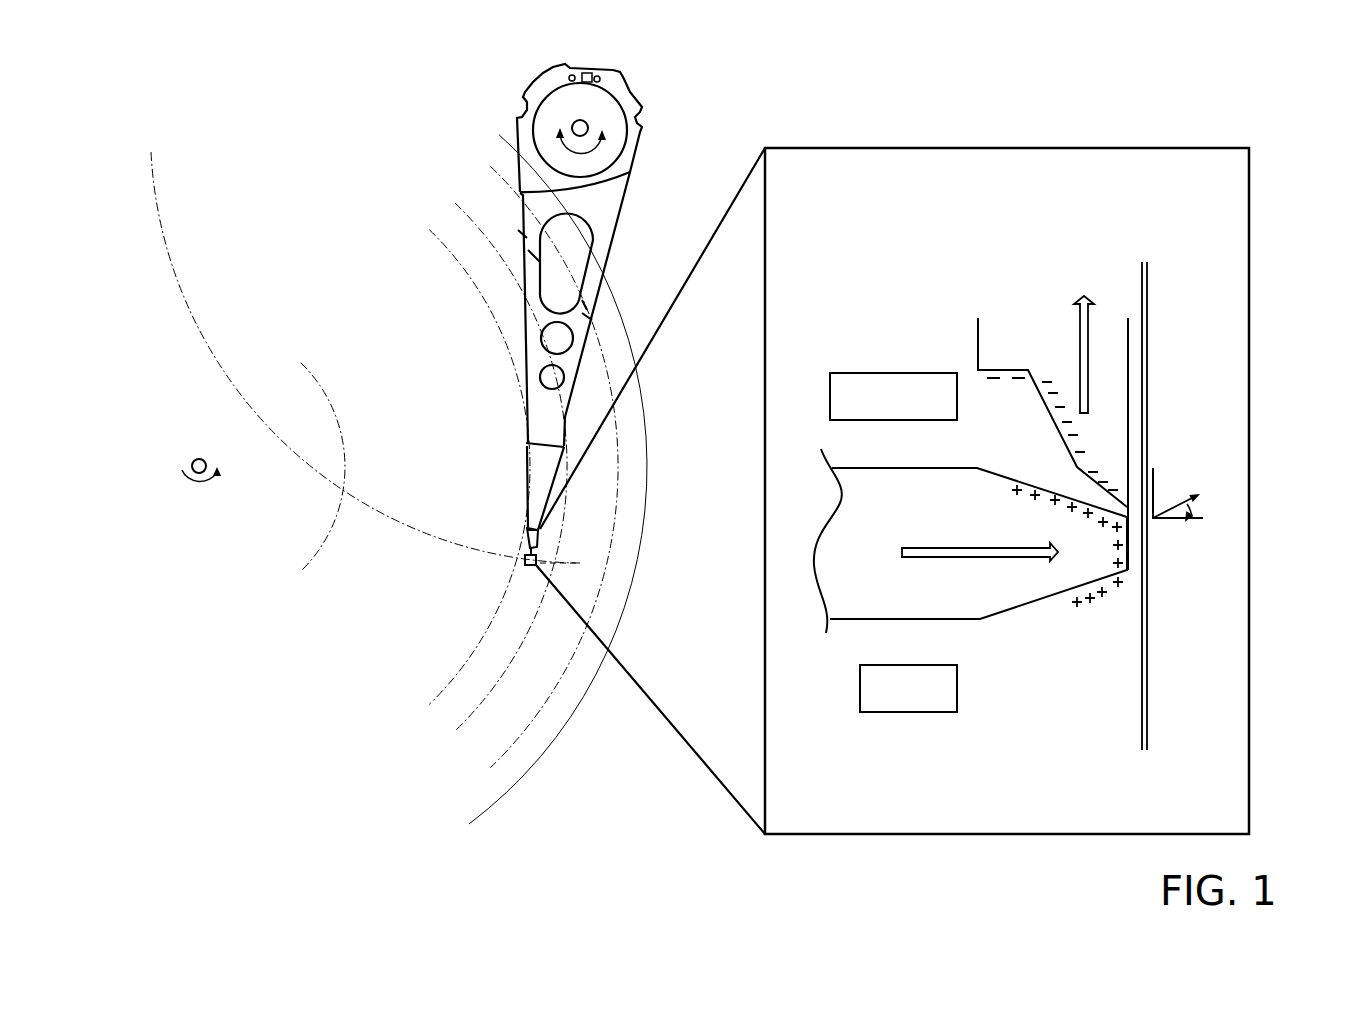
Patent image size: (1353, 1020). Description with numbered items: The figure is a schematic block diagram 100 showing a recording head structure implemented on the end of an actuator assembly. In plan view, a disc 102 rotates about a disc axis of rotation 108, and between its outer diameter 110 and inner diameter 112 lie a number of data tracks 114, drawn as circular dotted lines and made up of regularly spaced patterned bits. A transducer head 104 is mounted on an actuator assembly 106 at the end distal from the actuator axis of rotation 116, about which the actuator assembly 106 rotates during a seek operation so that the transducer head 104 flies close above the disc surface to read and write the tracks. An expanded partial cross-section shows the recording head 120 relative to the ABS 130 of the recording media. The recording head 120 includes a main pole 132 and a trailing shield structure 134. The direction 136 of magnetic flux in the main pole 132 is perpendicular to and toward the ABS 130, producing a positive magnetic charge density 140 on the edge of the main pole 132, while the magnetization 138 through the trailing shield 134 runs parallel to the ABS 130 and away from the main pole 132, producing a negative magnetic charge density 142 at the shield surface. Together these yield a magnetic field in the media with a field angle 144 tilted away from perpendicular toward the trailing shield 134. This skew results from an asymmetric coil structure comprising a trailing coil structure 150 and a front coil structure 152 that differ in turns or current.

The schematic block diagram 100 is at (207, 135).
The disc 102 is at (222, 705).
The transducer head 104 is at (525, 563).
The actuator assembly 106 is at (519, 118).
The disc axis of rotation 108 is at (182, 468).
The outer diameter 110 is at (493, 767).
The inner diameter 112 is at (308, 557).
The data tracks 114 is at (428, 728).
The actuator axis of rotation 116 is at (588, 128).
The recording head 120 is at (833, 835).
The ABS 130 is at (1159, 268).
The main pole 132 is at (862, 531).
The trailing shield structure 134 is at (962, 343).
The magnetization direction in main pole 136 is at (994, 561).
The magnetization in trailing shield 138 is at (1102, 351).
The positive magnetic charge density 140 is at (1010, 483).
The negative magnetic charge density 142 is at (1105, 455).
The field angle 144 is at (1200, 532).
The trailing coil structure 150 is at (893, 396).
The front coil structure 152 is at (908, 688).